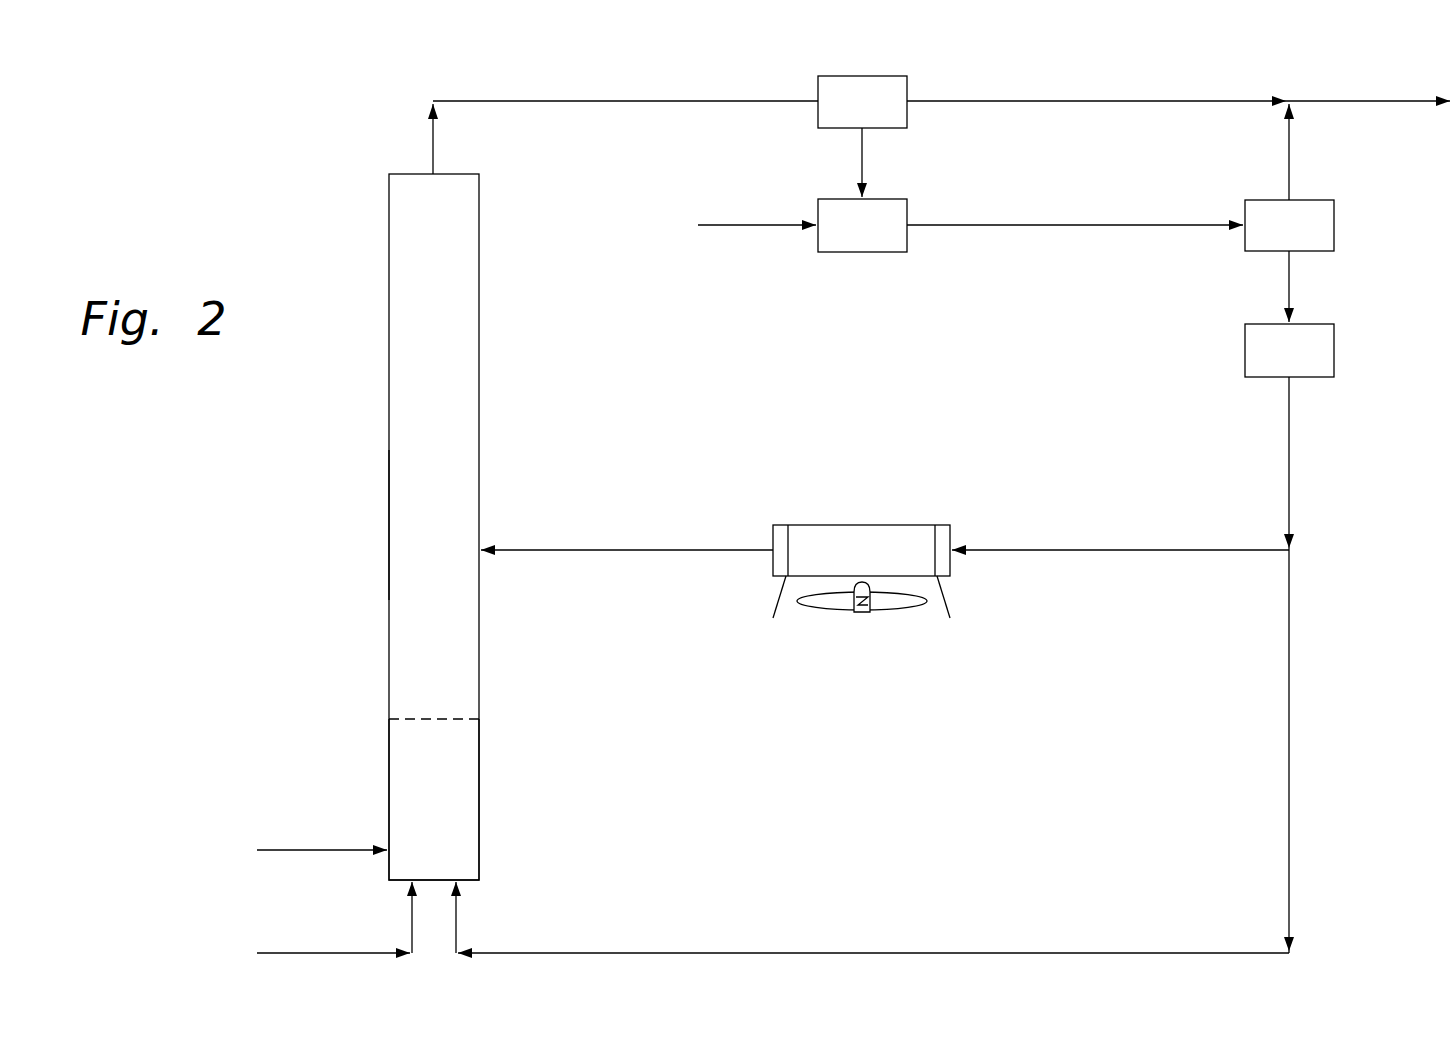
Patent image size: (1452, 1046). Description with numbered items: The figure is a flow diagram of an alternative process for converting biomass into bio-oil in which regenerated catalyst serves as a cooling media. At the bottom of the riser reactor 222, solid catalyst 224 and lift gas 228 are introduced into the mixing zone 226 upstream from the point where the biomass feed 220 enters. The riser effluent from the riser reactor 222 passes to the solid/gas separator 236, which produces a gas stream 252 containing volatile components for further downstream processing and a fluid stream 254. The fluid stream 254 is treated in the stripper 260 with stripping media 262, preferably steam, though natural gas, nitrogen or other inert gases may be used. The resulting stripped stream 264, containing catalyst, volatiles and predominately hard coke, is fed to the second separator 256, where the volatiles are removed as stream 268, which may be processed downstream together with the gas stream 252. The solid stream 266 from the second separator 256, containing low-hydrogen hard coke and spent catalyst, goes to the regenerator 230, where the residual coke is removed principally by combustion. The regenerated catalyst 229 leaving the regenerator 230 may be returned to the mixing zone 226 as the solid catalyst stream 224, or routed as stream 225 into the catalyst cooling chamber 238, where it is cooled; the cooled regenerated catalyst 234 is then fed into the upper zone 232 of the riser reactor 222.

The biomass feed 220 is at (299, 850).
The riser reactor 222 is at (411, 390).
The solid catalyst stream 224 is at (575, 953).
The regenerated catalyst stream to cooling chamber 225 is at (1188, 550).
The mixing zone 226 is at (465, 797).
The lift gas 228 is at (299, 953).
The regenerated catalyst 229 is at (1291, 507).
The regenerator 230 is at (1268, 364).
The upper zone 232 is at (403, 525).
The cooled regenerated catalyst 234 is at (578, 550).
The solid/gas separator 236 is at (841, 115).
The catalyst cooling chamber 238 is at (841, 561).
The gas stream 252 is at (1392, 101).
The fluid stream 254 is at (863, 159).
The second separator 256 is at (1268, 239).
The stripper 260 is at (841, 239).
The stripping media 262 is at (758, 225).
The stripped stream 264 is at (1075, 225).
The solid stream 266 is at (1291, 288).
The volatiles stream 268 is at (1291, 149).